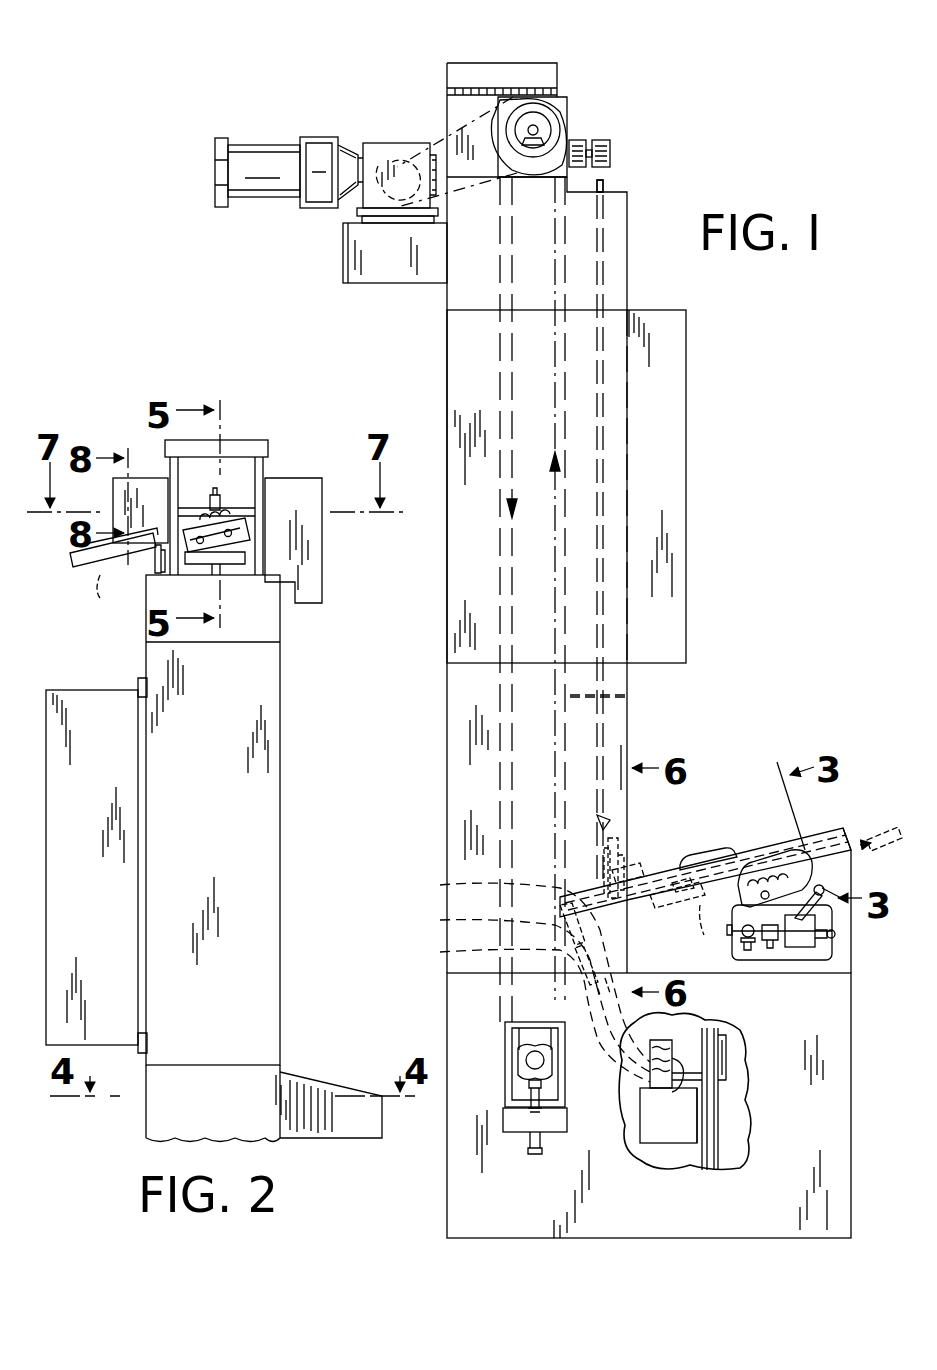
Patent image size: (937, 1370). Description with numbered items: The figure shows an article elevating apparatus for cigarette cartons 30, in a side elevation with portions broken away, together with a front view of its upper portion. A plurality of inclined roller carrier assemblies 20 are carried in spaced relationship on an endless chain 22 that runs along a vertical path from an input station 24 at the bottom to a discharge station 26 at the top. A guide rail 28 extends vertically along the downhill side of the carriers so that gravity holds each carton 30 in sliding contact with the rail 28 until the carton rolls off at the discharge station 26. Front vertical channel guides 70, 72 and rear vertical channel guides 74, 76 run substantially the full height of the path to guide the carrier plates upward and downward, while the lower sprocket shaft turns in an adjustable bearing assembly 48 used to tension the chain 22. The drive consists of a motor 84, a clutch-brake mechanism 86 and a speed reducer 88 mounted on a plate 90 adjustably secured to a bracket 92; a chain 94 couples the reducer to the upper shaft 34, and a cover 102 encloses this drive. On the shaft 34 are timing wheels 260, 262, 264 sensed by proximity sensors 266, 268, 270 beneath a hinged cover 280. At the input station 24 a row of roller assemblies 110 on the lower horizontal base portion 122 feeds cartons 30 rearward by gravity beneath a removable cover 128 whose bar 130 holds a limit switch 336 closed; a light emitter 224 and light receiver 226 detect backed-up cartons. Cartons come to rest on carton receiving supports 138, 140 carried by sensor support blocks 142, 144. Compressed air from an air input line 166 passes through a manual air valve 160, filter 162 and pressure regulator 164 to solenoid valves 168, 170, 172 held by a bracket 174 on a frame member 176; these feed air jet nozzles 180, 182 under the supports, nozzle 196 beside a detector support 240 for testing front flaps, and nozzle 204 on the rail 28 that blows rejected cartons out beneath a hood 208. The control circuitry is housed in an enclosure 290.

In FIG. 1, the inclined roller carrier assembly 20 is at (604, 130).
In FIG. 2, the inclined roller carrier assembly 20 is at (240, 480).
In FIG. 1, the endless chain 22 is at (509, 344).
In FIG. 1, the input station 24 is at (884, 799).
In FIG. 1, the discharge station 26 is at (610, 177).
In FIG. 2, the discharge station 26 is at (72, 578).
In FIG. 1, the guide rail 28 is at (598, 257).
In FIG. 1, the cigarette carton 30 is at (897, 826).
In FIG. 2, the cigarette carton 30 is at (84, 595).
In FIG. 1, the shaft 34 is at (537, 128).
In FIG. 1, the adjustable bearing assembly 48 is at (508, 1066).
In FIG. 1, the front vertical channel guide 70 is at (630, 701).
In FIG. 1, the front vertical channel guide 72 is at (597, 698).
In FIG. 1, the rear vertical channel guide 74 is at (499, 537).
In FIG. 1, the rear vertical channel guide 76 is at (500, 577).
In FIG. 1, the motor 84 is at (263, 145).
In FIG. 1, the clutch-brake mechanism 86 is at (313, 143).
In FIG. 1, the speed reducer 88 is at (376, 143).
In FIG. 1, the plate 90 is at (372, 218).
In FIG. 1, the bracket 92 is at (380, 272).
In FIG. 1, the chain 94 is at (436, 140).
In FIG. 2, the cover 102 is at (300, 488).
In FIG. 1, the roller assembly 110 is at (788, 887).
In FIG. 1, the lower horizontal base portion 122 is at (830, 1026).
In FIG. 1, the cover 128 is at (808, 848).
In FIG. 1, the bar 130 is at (650, 877).
In FIG. 1, the carton receiving support 138 is at (503, 965).
In FIG. 1, the carton receiving support 140 is at (503, 965).
In FIG. 1, the sensor support block 142 is at (502, 988).
In FIG. 1, the sensor support block 144 is at (502, 988).
In FIG. 1, the manual air valve 160 is at (820, 947).
In FIG. 1, the filter 162 is at (776, 950).
In FIG. 1, the pressure regulator 164 is at (756, 952).
In FIG. 1, the air input line 166 is at (836, 937).
In FIG. 1, the solenoid valve 168 is at (668, 1115).
In FIG. 1, the solenoid valve 170 is at (650, 1042).
In FIG. 1, the solenoid valve 172 is at (645, 1085).
In FIG. 1, the bracket 174 is at (687, 1135).
In FIG. 1, the frame member 176 is at (718, 1113).
In FIG. 1, the air jet nozzle 180 is at (503, 1010).
In FIG. 1, the air jet nozzle 182 is at (503, 1010).
In FIG. 1, the air jet nozzle 196 is at (628, 879).
In FIG. 1, the air jet nozzle 204 is at (592, 818).
In FIG. 2, the hood 208 is at (312, 1074).
In FIG. 1, the light emitter 224 is at (722, 863).
In FIG. 1, the light receiver 226 is at (720, 866).
In FIG. 1, the detector support 240 is at (625, 842).
In FIG. 1, the timing wheel 260 is at (615, 119).
In FIG. 1, the timing wheel 262 is at (615, 119).
In FIG. 1, the timing wheel 264 is at (560, 132).
In FIG. 1, the proximity sensor 266 is at (560, 104).
In FIG. 1, the proximity sensor 268 is at (560, 104).
In FIG. 1, the proximity sensor 270 is at (500, 100).
In FIG. 1, the hinged cover 280 is at (473, 92).
In FIG. 1, the enclosure 290 is at (686, 447).
In FIG. 2, the enclosure 290 is at (46, 696).
In FIG. 1, the limit switch 336 is at (696, 936).